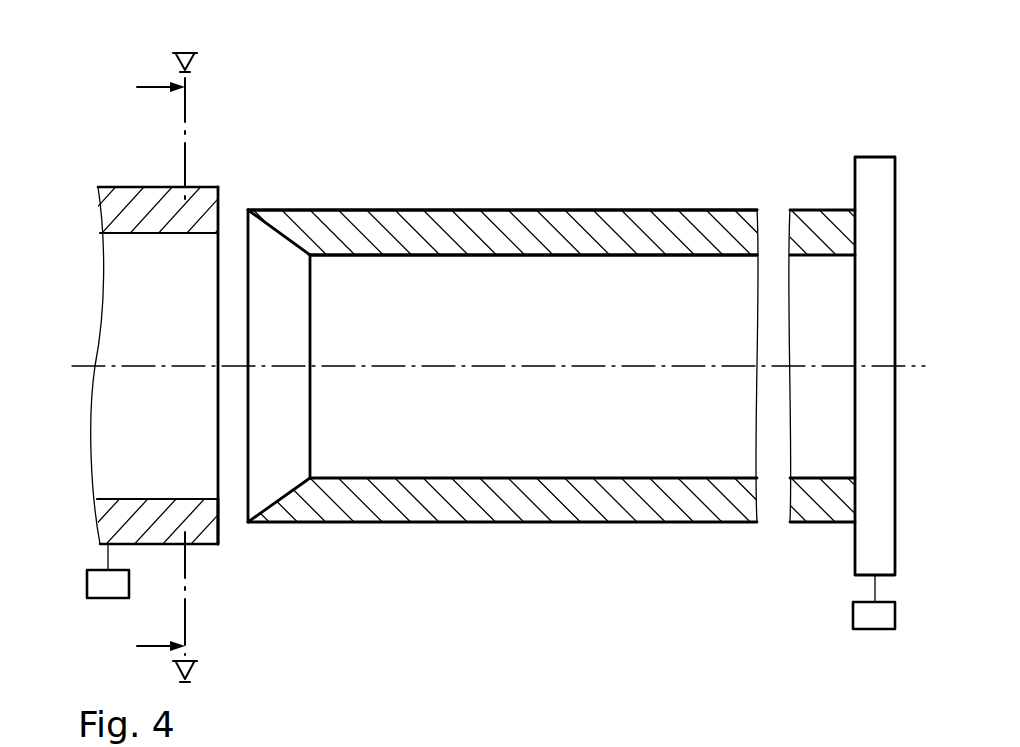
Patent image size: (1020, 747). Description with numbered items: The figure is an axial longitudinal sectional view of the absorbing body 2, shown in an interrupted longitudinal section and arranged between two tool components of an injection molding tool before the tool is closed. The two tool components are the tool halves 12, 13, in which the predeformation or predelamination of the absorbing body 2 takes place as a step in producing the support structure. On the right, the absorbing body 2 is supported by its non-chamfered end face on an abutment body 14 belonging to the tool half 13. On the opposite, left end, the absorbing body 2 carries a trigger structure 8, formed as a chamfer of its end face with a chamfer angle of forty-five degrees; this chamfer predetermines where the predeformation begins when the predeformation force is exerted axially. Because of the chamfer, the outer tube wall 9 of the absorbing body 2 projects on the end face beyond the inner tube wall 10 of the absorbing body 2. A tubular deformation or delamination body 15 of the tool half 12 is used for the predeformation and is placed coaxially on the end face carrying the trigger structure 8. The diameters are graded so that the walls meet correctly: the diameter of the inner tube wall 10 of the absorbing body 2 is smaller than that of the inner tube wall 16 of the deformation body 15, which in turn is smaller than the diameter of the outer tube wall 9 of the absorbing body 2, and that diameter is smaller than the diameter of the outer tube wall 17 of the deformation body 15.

The absorbing body 2 is at (426, 195).
The trigger structure 8 is at (274, 222).
The outer tube wall 9 is at (367, 208).
The inner tube wall 10 is at (533, 256).
The tool half 12 is at (105, 599).
The tool half 13 is at (877, 630).
The abutment body 14 is at (872, 167).
The deformation body 15 is at (120, 180).
The inner tube wall 16 is at (209, 234).
The outer tube wall 17 is at (208, 546).